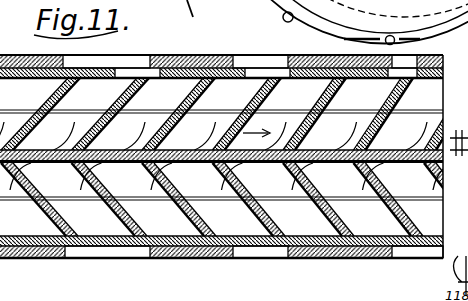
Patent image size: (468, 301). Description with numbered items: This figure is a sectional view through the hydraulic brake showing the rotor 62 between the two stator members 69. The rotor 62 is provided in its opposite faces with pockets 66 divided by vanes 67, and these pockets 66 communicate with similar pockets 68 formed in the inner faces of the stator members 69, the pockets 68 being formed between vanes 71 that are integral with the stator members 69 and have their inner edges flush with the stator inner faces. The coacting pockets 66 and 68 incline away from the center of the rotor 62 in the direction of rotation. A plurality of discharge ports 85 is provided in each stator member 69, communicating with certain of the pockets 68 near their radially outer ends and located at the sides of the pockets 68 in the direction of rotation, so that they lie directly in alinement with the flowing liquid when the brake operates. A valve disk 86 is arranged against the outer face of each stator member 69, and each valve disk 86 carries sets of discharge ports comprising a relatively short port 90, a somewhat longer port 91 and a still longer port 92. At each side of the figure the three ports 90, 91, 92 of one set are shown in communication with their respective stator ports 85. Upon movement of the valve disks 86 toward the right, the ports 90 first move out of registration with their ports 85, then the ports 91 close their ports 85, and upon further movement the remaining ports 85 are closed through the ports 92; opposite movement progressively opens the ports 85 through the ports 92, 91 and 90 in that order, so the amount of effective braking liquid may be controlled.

The rotor 62 is at (327, 150).
The pockets 66 is at (145, 155).
The vanes 67 is at (150, 132).
The pockets 68 is at (235, 98).
The stator members 69 is at (314, 83).
The vanes 71 is at (182, 96).
The discharge ports 85 is at (138, 77).
The valve disk 86 is at (217, 55).
The port 90 is at (416, 60).
The port 91 is at (260, 62).
The port 92 is at (103, 64).